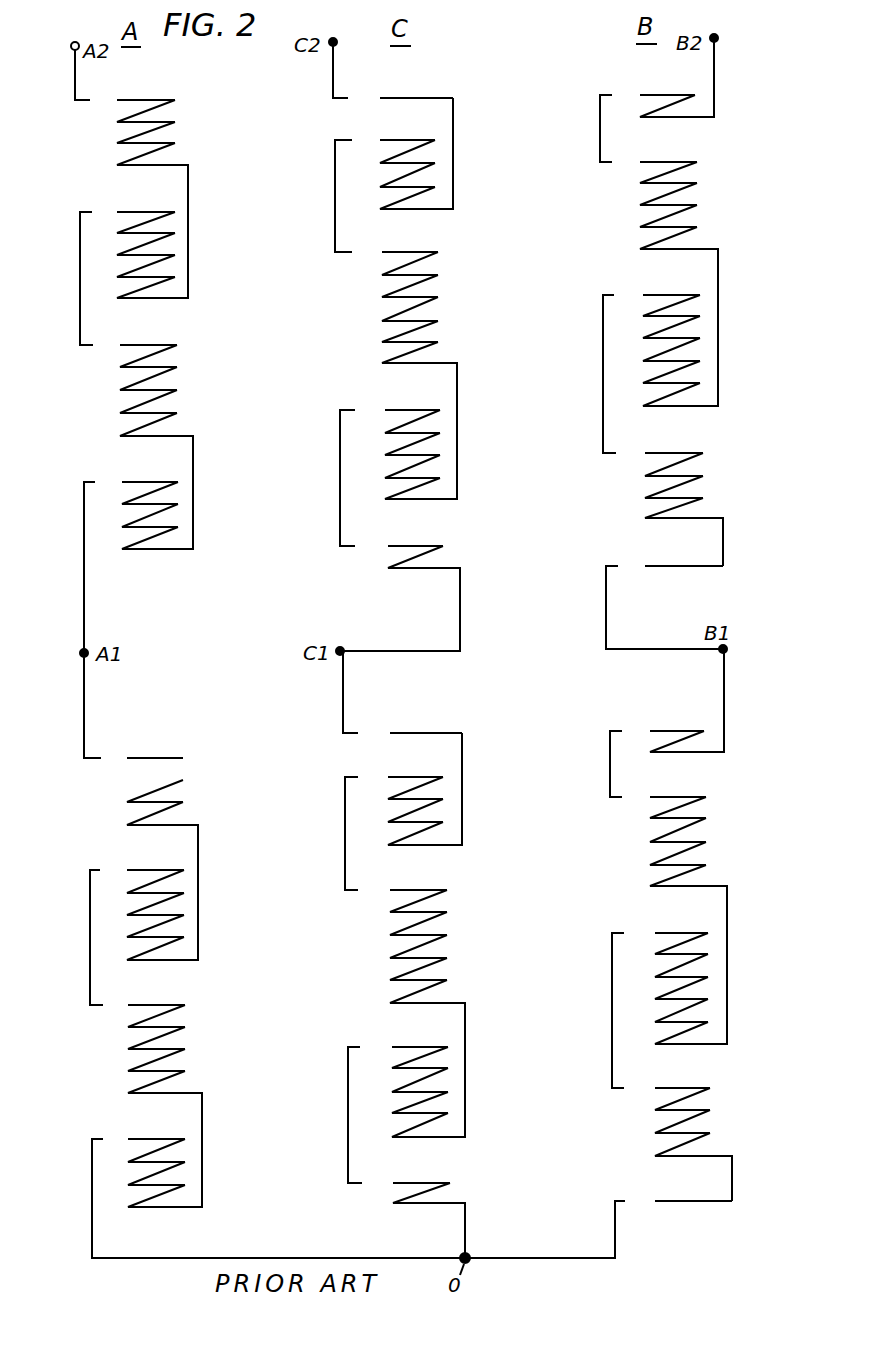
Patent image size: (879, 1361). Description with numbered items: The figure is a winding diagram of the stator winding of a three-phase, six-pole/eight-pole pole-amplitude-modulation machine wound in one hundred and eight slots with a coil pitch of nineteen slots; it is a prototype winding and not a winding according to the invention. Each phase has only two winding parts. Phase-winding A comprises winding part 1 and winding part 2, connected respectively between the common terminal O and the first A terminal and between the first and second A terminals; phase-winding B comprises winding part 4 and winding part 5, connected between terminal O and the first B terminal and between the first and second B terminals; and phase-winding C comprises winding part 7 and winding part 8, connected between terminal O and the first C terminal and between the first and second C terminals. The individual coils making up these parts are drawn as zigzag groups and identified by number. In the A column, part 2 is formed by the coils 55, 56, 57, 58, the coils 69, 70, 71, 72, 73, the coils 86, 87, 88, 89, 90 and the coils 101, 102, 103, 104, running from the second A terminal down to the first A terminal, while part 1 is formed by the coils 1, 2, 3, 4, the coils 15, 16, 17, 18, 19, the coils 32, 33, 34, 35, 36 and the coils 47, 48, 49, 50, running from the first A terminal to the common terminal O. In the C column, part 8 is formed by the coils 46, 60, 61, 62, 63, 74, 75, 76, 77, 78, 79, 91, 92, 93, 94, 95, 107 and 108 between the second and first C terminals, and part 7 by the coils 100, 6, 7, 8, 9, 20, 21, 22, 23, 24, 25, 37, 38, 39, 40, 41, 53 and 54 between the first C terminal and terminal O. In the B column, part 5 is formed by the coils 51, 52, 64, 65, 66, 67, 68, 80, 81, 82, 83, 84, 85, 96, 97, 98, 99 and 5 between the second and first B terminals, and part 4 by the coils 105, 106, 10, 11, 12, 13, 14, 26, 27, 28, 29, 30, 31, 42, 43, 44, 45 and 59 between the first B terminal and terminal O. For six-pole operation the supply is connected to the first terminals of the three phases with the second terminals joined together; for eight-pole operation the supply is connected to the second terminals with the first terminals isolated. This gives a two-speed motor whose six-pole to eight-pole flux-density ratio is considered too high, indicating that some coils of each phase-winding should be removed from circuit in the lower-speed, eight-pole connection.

The winding part 1 is at (203, 895).
The winding part 2 is at (195, 243).
The coil turn 3 is at (147, 797).
The winding part 4 is at (743, 974).
The winding part 5 is at (720, 318).
The coil turn 6 is at (407, 777).
The winding part 7 is at (479, 1047).
The winding part 8 is at (456, 160).
The coil turn 9 is at (407, 839).
The coil turn 10 is at (663, 797).
The coil turn 11 is at (663, 813).
The coil turn 12 is at (663, 836).
The coil turn 13 is at (663, 859).
The coil turn 14 is at (663, 881).
The coil turn 15 is at (140, 870).
The coil turn 16 is at (140, 887).
The coil turn 17 is at (140, 910).
The coil turn 18 is at (140, 932).
The coil turn 19 is at (140, 954).
The coil turn 20 is at (403, 890).
The coil turn 21 is at (403, 907).
The coil turn 22 is at (403, 929).
The coil turn 23 is at (403, 952).
The coil turn 24 is at (403, 975).
The coil turn 25 is at (403, 997).
The coil turn 26 is at (666, 933).
The coil turn 27 is at (666, 949).
The coil turn 28 is at (666, 971).
The coil turn 29 is at (666, 994).
The coil turn 30 is at (666, 1016).
The coil turn 31 is at (666, 1039).
The coil turn 32 is at (141, 1005).
The coil turn 33 is at (141, 1022).
The coil turn 34 is at (141, 1044).
The coil turn 35 is at (141, 1066).
The coil turn 36 is at (141, 1088).
The coil turn 37 is at (405, 1047).
The coil turn 38 is at (405, 1063).
The coil turn 39 is at (405, 1086).
The coil turn 40 is at (405, 1108).
The coil turn 41 is at (405, 1131).
The coil turn 42 is at (667, 1088).
The coil turn 43 is at (667, 1105).
The coil turn 44 is at (667, 1127).
The coil turn 45 is at (667, 1150).
The coil turn 46 is at (401, 98).
The coil turn 47 is at (141, 1139).
The coil turn 48 is at (141, 1156).
The coil turn 49 is at (141, 1179).
The coil turn 50 is at (141, 1202).
The coil turn 51 is at (652, 95).
The coil turn 52 is at (652, 112).
The coil turn 53 is at (406, 1183).
The coil turn 54 is at (406, 1199).
The coil turn 55 is at (131, 100).
The coil turn 56 is at (131, 117).
The coil turn 57 is at (131, 138).
The coil turn 58 is at (131, 160).
The coil turn 59 is at (678, 1201).
The coil turn 60 is at (392, 140).
The coil turn 61 is at (392, 157).
The coil turn 62 is at (392, 181).
The coil turn 63 is at (392, 204).
The coil turn 64 is at (653, 162).
The coil turn 65 is at (653, 178).
The coil turn 66 is at (653, 200).
The coil turn 67 is at (653, 222).
The coil turn 68 is at (653, 244).
The coil turn 69 is at (131, 212).
The coil turn 70 is at (131, 228).
The coil turn 71 is at (131, 250).
The coil turn 72 is at (131, 272).
The coil turn 73 is at (131, 293).
The coil turn 74 is at (395, 252).
The coil turn 75 is at (395, 269).
The coil turn 76 is at (395, 292).
The coil turn 77 is at (395, 315).
The coil turn 78 is at (395, 337).
The coil turn 79 is at (395, 358).
The coil turn 80 is at (656, 295).
The coil turn 81 is at (656, 311).
The coil turn 82 is at (656, 333).
The coil turn 83 is at (656, 355).
The coil turn 84 is at (656, 378).
The coil turn 85 is at (656, 400).
The coil turn 86 is at (133, 345).
The coil turn 87 is at (133, 362).
The coil turn 88 is at (133, 384).
The coil turn 89 is at (133, 407).
The coil turn 90 is at (133, 430).
The coil turn 91 is at (397, 410).
The coil turn 92 is at (397, 427).
The coil turn 93 is at (397, 450).
The coil turn 94 is at (397, 472).
The coil turn 95 is at (397, 494).
The coil turn 96 is at (659, 453).
The coil turn 97 is at (659, 470).
The coil turn 98 is at (659, 493).
The coil turn 99 is at (659, 514).
The coil turn 100 is at (409, 733).
The coil turn 101 is at (133, 482).
The coil turn 102 is at (133, 499).
The coil turn 103 is at (133, 521).
The coil turn 104 is at (133, 544).
The coil turn 105 is at (660, 731).
The coil turn 106 is at (660, 747).
The coil turn 107 is at (399, 546).
The coil turn 108 is at (399, 563).